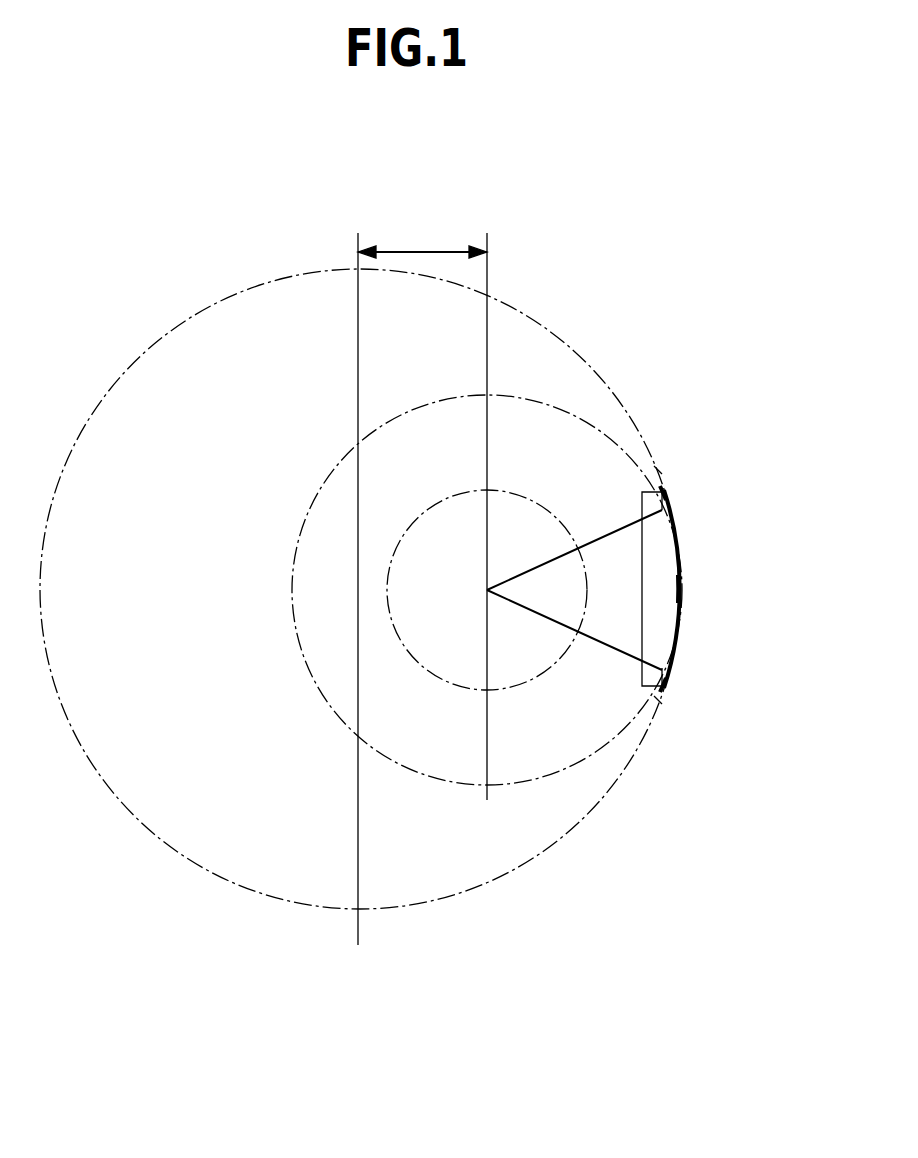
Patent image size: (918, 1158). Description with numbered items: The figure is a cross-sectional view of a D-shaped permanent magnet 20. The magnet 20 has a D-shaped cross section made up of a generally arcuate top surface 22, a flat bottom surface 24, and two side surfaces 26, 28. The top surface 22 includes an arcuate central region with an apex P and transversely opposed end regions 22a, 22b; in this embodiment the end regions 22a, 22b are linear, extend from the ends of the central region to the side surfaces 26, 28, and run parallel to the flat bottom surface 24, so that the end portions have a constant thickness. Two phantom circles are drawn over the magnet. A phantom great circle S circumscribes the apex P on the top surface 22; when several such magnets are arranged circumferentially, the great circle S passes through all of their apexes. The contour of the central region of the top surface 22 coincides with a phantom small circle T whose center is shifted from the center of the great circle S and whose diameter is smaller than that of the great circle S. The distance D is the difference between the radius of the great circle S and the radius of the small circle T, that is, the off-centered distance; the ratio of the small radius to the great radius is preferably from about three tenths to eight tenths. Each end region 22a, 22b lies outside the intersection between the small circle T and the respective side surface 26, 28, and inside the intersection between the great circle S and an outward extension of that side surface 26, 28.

The permanent magnet 20 is at (660, 658).
The generally arcuate top surface 22 is at (676, 648).
The transversely opposed end region 22a is at (663, 492).
The transversely opposed end region 22b is at (663, 686).
The flat bottom surface 24 is at (640, 633).
The side surface 26 is at (658, 470).
The side surface 28 is at (658, 700).
The phantom great circle S is at (148, 348).
The phantom small circle T is at (316, 490).
The apex P is at (683, 585).
The off-centered distance D is at (422, 242).